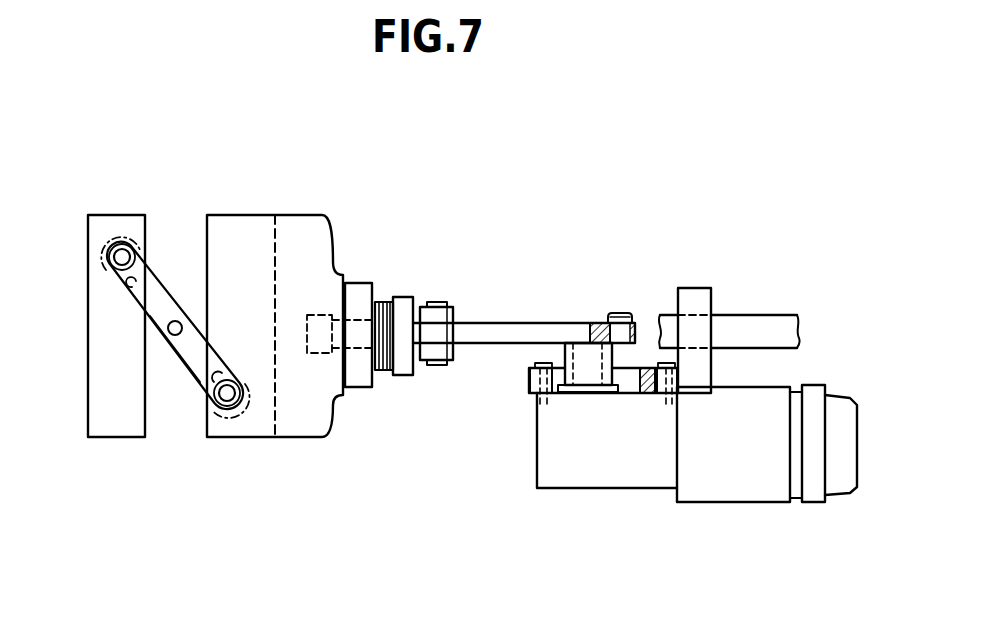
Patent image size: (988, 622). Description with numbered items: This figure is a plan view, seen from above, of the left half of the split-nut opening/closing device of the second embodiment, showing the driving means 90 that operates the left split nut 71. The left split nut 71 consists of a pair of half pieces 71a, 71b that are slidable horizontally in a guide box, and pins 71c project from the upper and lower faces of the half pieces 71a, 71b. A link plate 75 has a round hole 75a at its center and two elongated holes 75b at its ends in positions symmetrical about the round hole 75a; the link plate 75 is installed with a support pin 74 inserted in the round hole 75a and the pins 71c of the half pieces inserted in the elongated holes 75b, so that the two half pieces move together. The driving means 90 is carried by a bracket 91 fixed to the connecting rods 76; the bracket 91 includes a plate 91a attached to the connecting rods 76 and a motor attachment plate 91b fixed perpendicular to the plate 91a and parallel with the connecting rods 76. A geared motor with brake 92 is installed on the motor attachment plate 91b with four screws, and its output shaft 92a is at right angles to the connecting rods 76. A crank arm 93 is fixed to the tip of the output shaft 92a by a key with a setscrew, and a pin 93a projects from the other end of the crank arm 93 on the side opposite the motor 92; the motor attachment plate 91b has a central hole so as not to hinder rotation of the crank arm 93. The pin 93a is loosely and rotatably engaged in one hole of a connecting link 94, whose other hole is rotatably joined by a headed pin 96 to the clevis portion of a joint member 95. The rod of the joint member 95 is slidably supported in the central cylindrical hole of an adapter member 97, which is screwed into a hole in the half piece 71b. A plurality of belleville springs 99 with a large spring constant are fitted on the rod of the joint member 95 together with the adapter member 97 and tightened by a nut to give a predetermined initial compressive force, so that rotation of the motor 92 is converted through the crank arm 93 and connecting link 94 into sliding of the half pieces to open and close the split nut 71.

The left split nut 71 is at (125, 128).
The left half piece 71a is at (113, 215).
The right half piece 71b is at (257, 215).
The pin 71c is at (116, 259).
The support pin 74 is at (167, 331).
The link plate 75 is at (173, 290).
The round hole 75a is at (188, 338).
The elongated hole 75b is at (122, 285).
The connecting rod 76 is at (785, 313).
The driving means 90 is at (472, 238).
The bracket 91 is at (761, 170).
The plate 91a is at (698, 288).
The motor attachment plate 91b is at (510, 367).
The geared motor with brake 92 is at (753, 502).
The output shaft 92a is at (561, 362).
The crank arm 93 is at (628, 372).
The pin 93a is at (617, 313).
The connecting link 94 is at (470, 347).
The joint member 95 is at (402, 376).
The headed pin 96 is at (436, 302).
The adapter member 97 is at (355, 283).
The belleville spring 99 is at (383, 302).